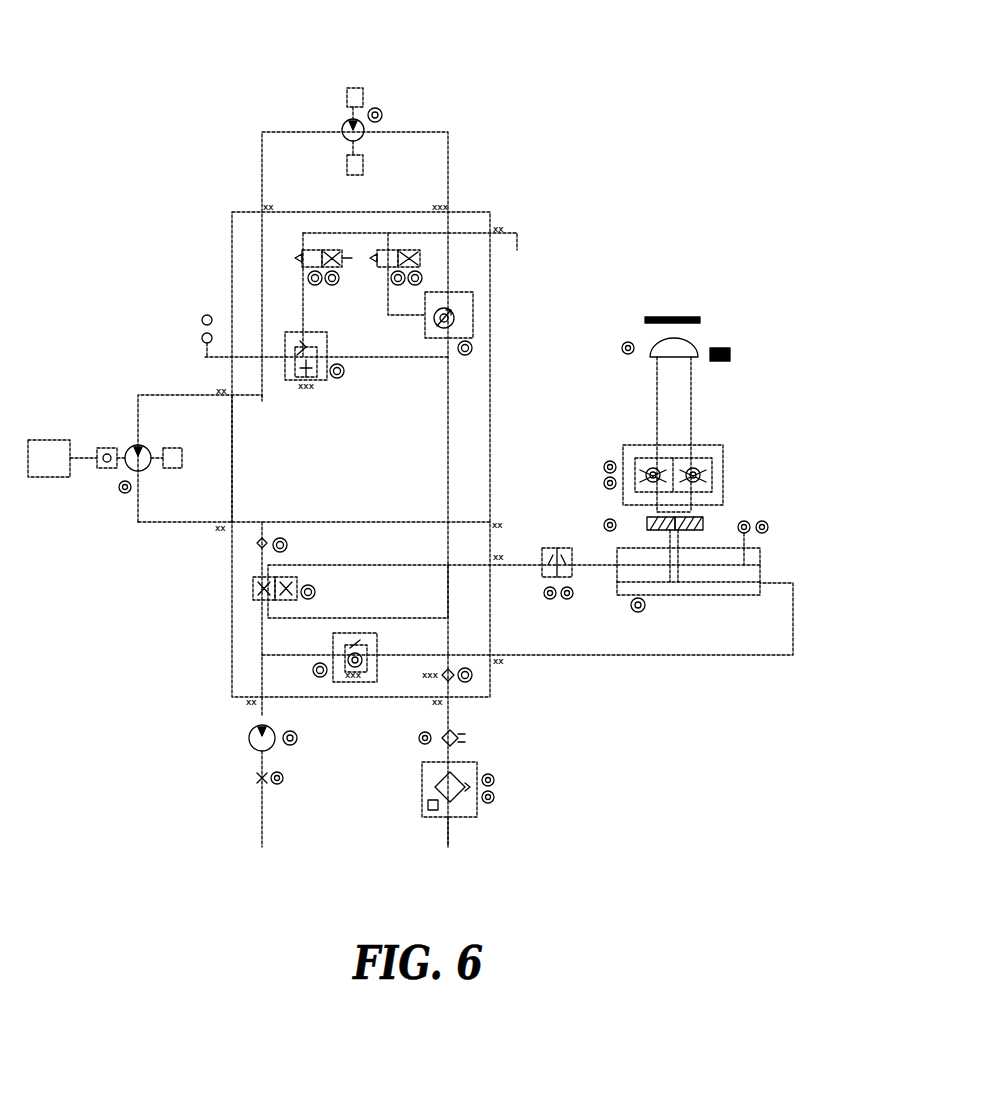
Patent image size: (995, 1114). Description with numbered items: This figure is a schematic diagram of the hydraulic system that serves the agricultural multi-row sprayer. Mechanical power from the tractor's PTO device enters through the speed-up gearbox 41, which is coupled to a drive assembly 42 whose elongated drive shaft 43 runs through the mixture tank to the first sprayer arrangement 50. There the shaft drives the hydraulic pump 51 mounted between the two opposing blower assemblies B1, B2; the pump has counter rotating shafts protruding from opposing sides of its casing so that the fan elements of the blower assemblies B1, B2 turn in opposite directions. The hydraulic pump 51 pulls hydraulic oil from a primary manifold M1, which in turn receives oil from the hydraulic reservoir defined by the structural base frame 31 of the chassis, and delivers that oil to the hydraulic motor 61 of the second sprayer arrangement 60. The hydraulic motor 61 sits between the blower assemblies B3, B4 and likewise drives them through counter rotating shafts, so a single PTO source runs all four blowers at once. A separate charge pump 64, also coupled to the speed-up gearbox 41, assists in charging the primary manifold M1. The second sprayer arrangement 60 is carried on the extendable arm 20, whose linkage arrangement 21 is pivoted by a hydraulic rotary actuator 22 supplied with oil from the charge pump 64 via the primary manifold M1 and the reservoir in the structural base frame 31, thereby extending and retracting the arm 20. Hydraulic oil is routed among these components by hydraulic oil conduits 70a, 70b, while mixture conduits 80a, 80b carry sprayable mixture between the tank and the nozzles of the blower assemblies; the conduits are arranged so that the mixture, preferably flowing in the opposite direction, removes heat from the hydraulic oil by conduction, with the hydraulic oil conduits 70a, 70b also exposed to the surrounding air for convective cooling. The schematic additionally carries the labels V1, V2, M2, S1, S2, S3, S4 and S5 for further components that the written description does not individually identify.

The second sprayer arrangement 60 is at (320, 96).
The hydraulic motor 61 is at (365, 141).
The blower assembly B4 is at (365, 94).
The blower assembly B3 is at (364, 165).
The solenoid valve S1 is at (330, 274).
The solenoid valve S2 is at (406, 257).
The structural base frame 31 is at (517, 250).
The primary manifold M1 is at (490, 318).
The extendable arm 20 is at (721, 284).
The linkage arrangement 21 is at (683, 316).
The hydraulic rotary actuator 22 is at (687, 350).
The control valve V2 is at (700, 520).
The hydraulic motor M2 is at (723, 510).
The solenoid S4 is at (639, 534).
The solenoid S5 is at (721, 529).
The speed-up gearbox 41 is at (74, 421).
The drive assembly 42 is at (74, 421).
The elongated drive shaft 43 is at (80, 452).
The first sprayer arrangement 50 is at (125, 428).
The hydraulic pump 51 is at (148, 469).
The blower assembly B1 is at (105, 470).
The blower assembly B2 is at (173, 447).
The hydraulic oil conduit 70b is at (171, 563).
The mixture conduit 80b is at (170, 525).
The control valve V1 is at (297, 577).
The solenoid valve S3 is at (300, 584).
The charge pump 64 is at (257, 727).
The hydraulic oil conduit 70a is at (536, 760).
The mixture conduit 80a is at (448, 712).